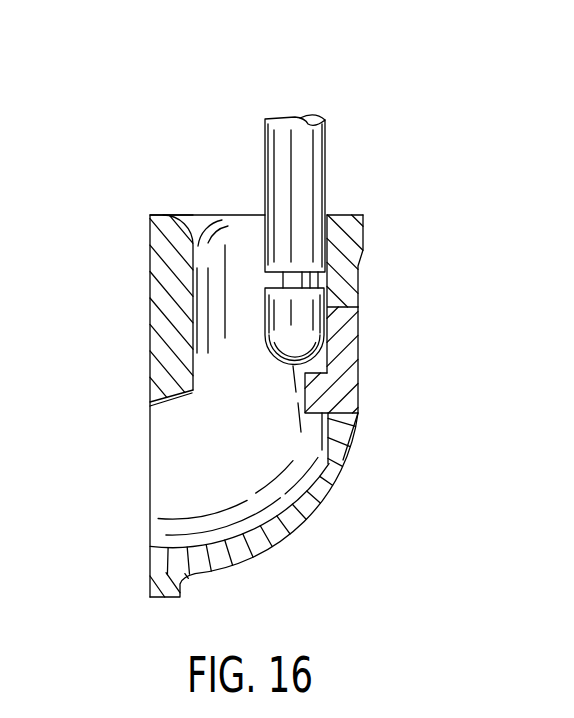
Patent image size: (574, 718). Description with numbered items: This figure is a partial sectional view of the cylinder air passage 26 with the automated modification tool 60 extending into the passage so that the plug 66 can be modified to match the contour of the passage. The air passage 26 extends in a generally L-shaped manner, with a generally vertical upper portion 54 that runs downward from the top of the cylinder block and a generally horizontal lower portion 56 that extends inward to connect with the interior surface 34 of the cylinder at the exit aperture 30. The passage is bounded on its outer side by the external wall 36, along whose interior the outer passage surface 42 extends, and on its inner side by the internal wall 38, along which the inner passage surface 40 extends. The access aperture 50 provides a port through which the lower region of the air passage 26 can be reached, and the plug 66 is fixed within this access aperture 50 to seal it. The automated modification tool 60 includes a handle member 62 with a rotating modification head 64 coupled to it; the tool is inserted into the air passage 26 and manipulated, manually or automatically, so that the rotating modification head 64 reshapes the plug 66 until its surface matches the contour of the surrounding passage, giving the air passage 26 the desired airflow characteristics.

The air passage 26 is at (249, 122).
The exit aperture 30 is at (149, 447).
The interior surface 34 is at (149, 295).
The external wall 36 is at (359, 265).
The internal wall 38 is at (172, 210).
The inner passage surface 40 is at (193, 373).
The outer passage surface 42 is at (322, 463).
The access aperture 50 is at (358, 430).
The upper portion 54 is at (244, 232).
The lower portion 56 is at (165, 474).
The automated modification tool 60 is at (350, 150).
The handle member 62 is at (290, 116).
The rotating modification head 64 is at (292, 370).
The plug 66 is at (358, 342).